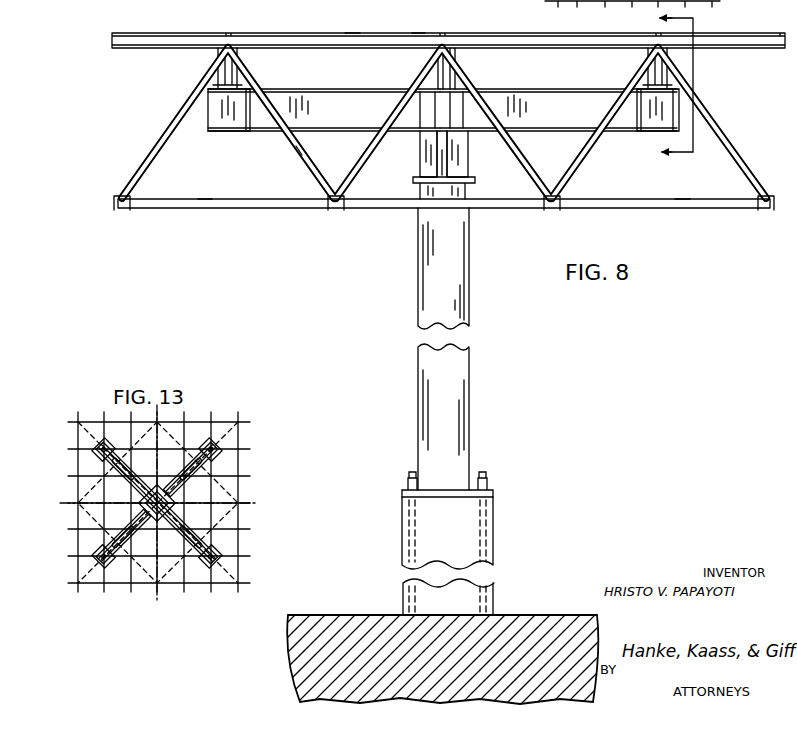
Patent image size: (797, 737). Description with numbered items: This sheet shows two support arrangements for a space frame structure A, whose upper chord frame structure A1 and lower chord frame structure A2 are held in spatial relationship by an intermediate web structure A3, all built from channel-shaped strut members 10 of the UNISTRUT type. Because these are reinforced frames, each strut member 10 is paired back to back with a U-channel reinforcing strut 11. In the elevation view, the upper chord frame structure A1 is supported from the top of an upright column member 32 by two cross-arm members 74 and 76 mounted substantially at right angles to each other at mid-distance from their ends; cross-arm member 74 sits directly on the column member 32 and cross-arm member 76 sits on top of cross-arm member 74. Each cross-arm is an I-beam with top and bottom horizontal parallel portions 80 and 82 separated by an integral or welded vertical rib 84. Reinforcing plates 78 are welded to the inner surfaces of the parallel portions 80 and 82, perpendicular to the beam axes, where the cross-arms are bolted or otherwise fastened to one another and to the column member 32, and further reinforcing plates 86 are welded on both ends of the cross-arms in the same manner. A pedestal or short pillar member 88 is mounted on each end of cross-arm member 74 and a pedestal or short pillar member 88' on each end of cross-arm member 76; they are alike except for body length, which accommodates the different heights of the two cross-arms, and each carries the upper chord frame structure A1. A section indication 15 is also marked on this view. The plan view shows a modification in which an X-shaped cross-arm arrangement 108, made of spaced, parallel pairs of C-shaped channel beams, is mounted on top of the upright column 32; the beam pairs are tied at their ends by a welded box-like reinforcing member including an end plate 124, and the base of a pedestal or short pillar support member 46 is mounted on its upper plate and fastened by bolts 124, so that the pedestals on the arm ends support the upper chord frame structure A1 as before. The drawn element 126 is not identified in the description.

In FIG. 8, the strut member 10 is at (238, 15).
In FIG. 8, the U-channel reinforcing strut 11 is at (275, 49).
In FIG. 8, the section line 15 is at (636, 87).
In FIG. 8, the upright column member 32 is at (470, 262).
In FIG. 8, the cross-arm member 74 is at (437, 154).
In FIG. 8, the cross-arm member 76 is at (340, 107).
In FIG. 8, the reinforcing plate 78 is at (420, 109).
In FIG. 8, the top horizontal parallel portion 80 is at (528, 94).
In FIG. 8, the bottom horizontal parallel portion 82 is at (365, 130).
In FIG. 8, the vertical rib 84 is at (560, 112).
In FIG. 8, the reinforcing plate 86 is at (240, 118).
In FIG. 8, the pedestal or short pillar member 88 is at (415, 69).
In FIG. 8, the pedestal or short pillar member 88' is at (477, 68).
In FIG. 13, the X-shaped cross-arm arrangement 108 is at (200, 484).
In FIG. 13, the end plate / bolts 124 is at (115, 527).
In FIG. 13, the diagonal bar 126 is at (170, 508).
In FIG. 13, the pedestal or short pillar support member 46 is at (100, 438).
In FIG. 8, the space frame structure A is at (418, 16).
In FIG. 8, the upper chord frame structure A1 is at (352, 32).
In FIG. 13, the upper chord frame structure A1 is at (85, 443).
In FIG. 8, the lower chord frame structure A2 is at (205, 193).
In FIG. 13, the lower chord frame structure A2 is at (243, 432).
In FIG. 8, the intermediate web structure A3 is at (292, 150).
In FIG. 13, the intermediate web structure A3 is at (197, 432).